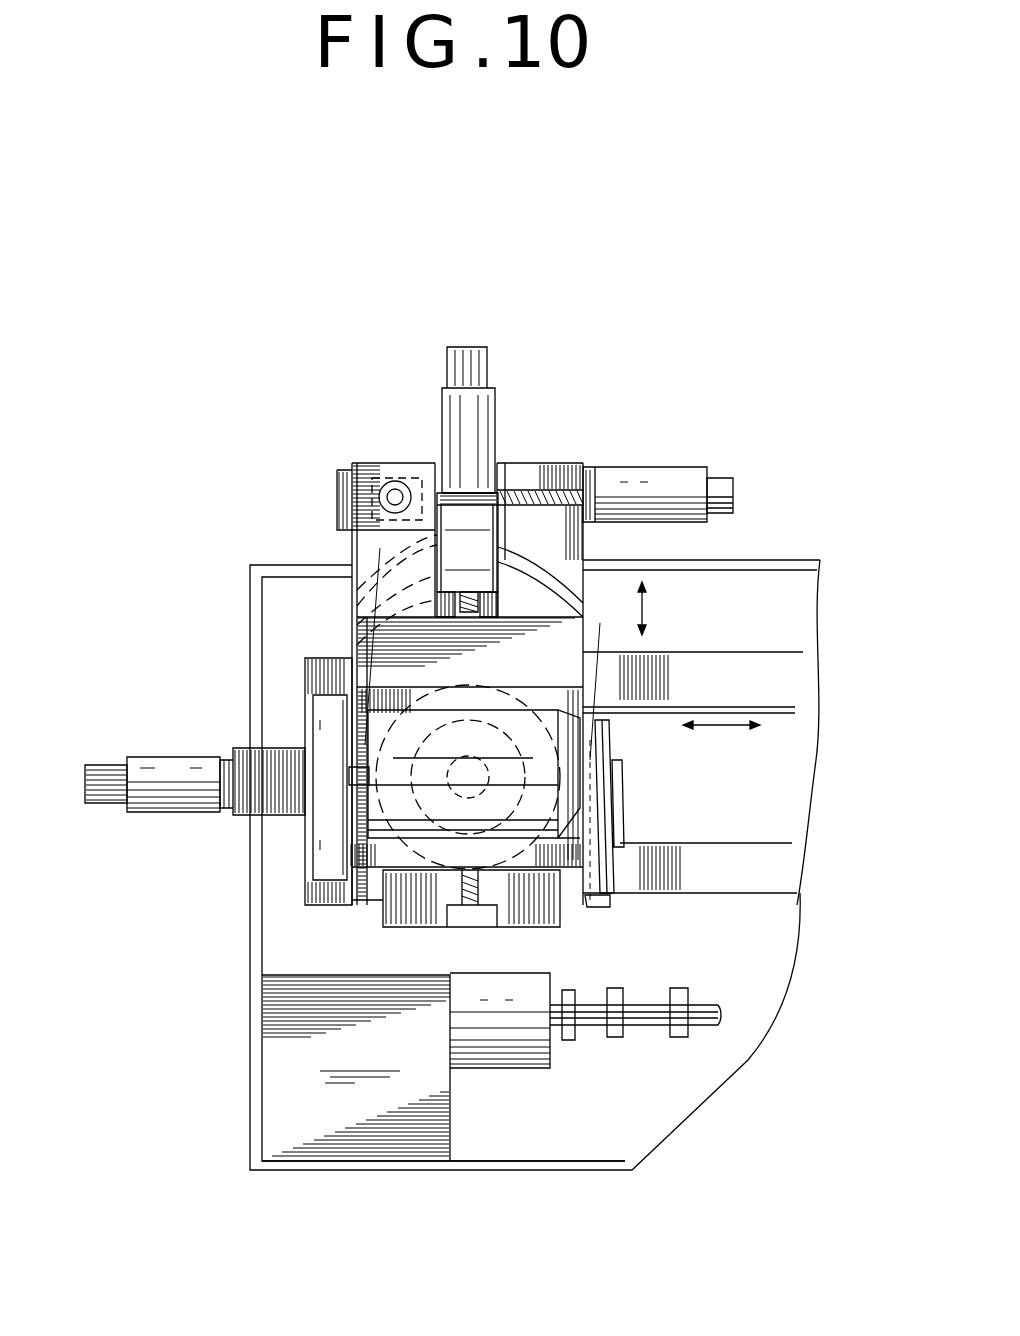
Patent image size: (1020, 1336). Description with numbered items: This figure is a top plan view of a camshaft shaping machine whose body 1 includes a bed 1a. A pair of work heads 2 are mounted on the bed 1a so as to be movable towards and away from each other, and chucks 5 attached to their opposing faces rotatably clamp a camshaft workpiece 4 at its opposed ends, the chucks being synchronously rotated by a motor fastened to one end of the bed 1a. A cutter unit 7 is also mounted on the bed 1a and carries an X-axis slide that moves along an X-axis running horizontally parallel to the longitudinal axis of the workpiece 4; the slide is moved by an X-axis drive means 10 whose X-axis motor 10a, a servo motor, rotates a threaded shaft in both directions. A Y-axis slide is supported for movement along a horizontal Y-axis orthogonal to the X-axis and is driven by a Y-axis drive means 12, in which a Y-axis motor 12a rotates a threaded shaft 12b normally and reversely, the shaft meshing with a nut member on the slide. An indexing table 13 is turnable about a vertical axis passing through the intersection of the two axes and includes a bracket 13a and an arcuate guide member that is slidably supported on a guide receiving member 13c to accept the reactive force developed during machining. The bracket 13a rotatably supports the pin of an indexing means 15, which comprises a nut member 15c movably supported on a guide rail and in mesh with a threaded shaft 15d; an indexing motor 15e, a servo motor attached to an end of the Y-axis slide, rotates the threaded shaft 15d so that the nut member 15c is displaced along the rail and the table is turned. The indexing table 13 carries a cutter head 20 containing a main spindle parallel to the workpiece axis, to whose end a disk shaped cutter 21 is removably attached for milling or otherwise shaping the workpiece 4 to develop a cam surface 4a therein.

The body 1 is at (247, 1073).
The bed 1a is at (318, 1173).
The work heads 2 is at (287, 1010).
The camshaft workpiece 4 is at (592, 1020).
The cam surface 4a is at (678, 1030).
The chucks 5 is at (507, 1030).
The cutter unit 7 is at (349, 673).
The X-axis drive means 10 is at (194, 815).
The X-axis motor 10a is at (180, 768).
The Y-axis drive means 12 is at (503, 389).
The Y-axis motor 12a is at (495, 433).
The threaded shaft 12b is at (470, 612).
The indexing table 13 is at (353, 638).
The bracket 13a is at (372, 540).
The guide receiving member 13c is at (347, 580).
The indexing means 15 is at (645, 462).
The nut member 15c is at (398, 478).
The threaded shaft 15d is at (530, 487).
The indexing motor 15e is at (683, 478).
The cutter head 20 is at (378, 850).
The disk shaped cutter 21 is at (615, 720).